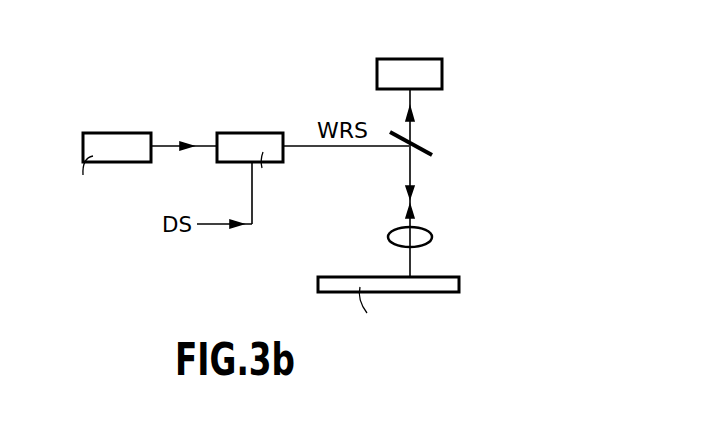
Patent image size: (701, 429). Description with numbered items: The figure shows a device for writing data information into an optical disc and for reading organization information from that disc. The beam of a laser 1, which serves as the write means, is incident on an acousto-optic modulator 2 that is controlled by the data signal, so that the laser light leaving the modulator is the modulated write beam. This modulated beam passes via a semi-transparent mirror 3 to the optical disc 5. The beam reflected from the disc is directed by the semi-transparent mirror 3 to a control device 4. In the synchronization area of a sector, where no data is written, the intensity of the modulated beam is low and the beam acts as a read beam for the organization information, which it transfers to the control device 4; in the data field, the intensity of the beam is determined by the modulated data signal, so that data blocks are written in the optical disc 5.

The laser 1 is at (112, 143).
The acousto-optic modulator 2 is at (243, 138).
The semi-transparent mirror 3 is at (423, 147).
The control device 4 is at (437, 44).
The optical disc 5 is at (443, 282).